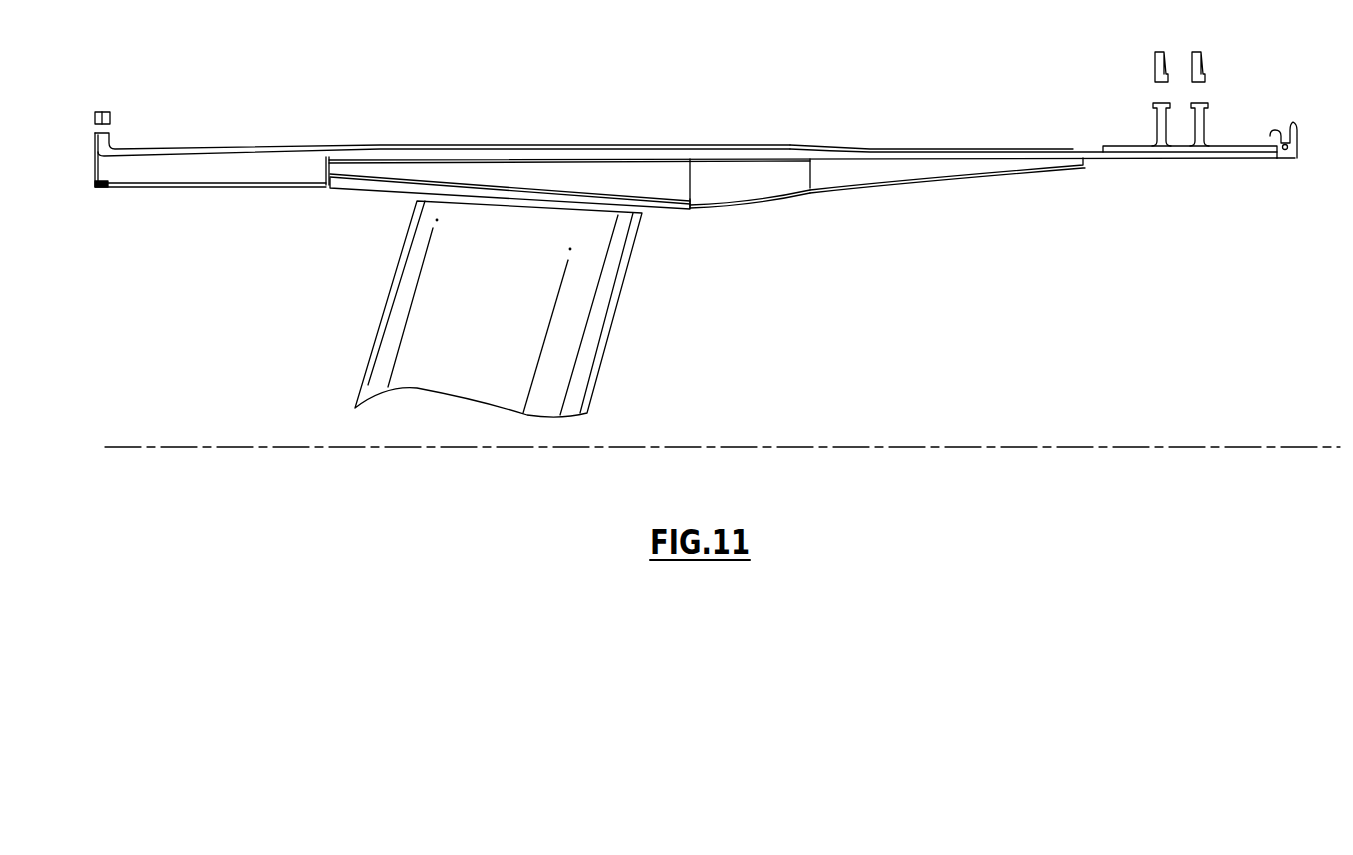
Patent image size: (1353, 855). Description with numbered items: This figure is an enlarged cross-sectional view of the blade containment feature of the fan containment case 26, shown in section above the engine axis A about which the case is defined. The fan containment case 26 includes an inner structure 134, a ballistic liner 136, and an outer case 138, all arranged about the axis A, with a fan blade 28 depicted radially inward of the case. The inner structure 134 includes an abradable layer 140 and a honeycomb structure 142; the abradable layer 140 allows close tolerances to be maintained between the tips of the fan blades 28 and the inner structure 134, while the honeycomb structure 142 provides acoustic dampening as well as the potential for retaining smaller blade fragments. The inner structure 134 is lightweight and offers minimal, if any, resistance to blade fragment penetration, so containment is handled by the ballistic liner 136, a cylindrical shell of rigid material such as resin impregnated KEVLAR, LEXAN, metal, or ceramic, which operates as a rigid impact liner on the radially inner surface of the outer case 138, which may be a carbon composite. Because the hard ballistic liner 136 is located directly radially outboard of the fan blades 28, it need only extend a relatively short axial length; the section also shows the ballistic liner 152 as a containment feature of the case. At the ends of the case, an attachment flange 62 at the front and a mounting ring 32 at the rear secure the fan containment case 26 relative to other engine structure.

The fan containment case 26 is at (780, 126).
The fan blades 28 is at (486, 325).
The mounting ring 32 is at (1228, 92).
The attachment flange 62 is at (128, 123).
The inner structure 134 is at (733, 218).
The ballistic liner 136 is at (596, 162).
The outer case 138 is at (452, 147).
The abradable layer 140 is at (378, 182).
The honeycomb structure 142 is at (788, 199).
The ballistic liner 152 is at (702, 128).
The axis A is at (1300, 447).